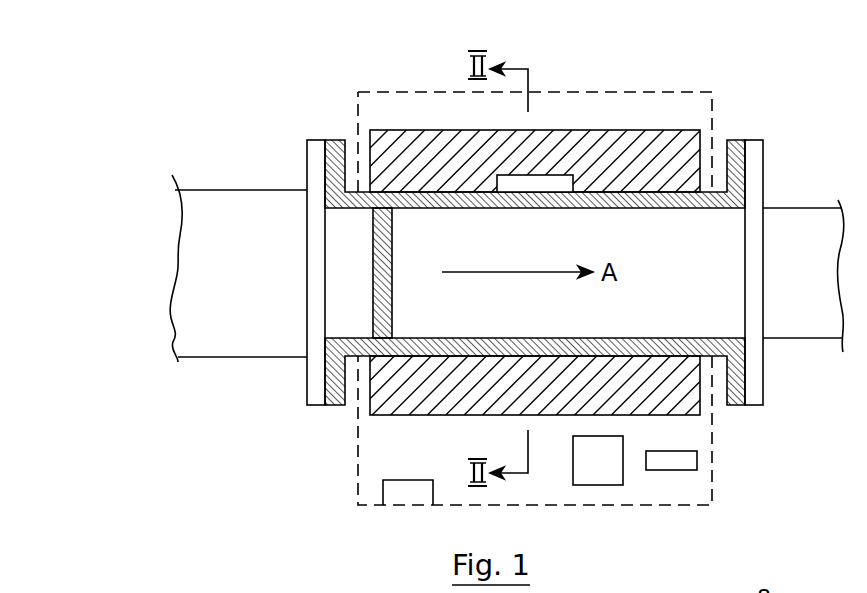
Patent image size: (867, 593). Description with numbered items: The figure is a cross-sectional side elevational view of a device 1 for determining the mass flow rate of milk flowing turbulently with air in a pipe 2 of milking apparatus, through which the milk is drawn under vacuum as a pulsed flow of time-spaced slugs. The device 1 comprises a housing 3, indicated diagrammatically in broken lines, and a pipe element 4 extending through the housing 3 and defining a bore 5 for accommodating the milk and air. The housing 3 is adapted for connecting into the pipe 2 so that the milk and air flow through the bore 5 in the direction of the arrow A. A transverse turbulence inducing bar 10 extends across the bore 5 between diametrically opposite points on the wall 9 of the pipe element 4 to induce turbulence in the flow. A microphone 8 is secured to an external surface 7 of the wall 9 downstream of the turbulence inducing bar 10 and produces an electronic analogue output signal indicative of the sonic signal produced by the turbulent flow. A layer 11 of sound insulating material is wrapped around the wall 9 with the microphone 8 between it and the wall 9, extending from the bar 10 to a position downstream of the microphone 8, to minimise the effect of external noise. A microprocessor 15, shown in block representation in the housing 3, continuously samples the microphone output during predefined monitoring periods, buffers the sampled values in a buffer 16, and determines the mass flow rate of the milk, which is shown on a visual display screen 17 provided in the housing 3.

The device 1 is at (294, 96).
The pipe 2 is at (225, 338).
The housing 3 is at (657, 510).
The pipe element 4 is at (668, 197).
The bore 5 is at (690, 210).
The external surface 7 is at (631, 190).
The microphone 8 is at (555, 180).
The wall 9 is at (452, 197).
The turbulence inducing bar 10 is at (382, 303).
The layer of sound insulating material 11 is at (410, 398).
The microprocessor 15 is at (592, 465).
The buffer 16 is at (682, 462).
The visual display screen 17 is at (400, 488).